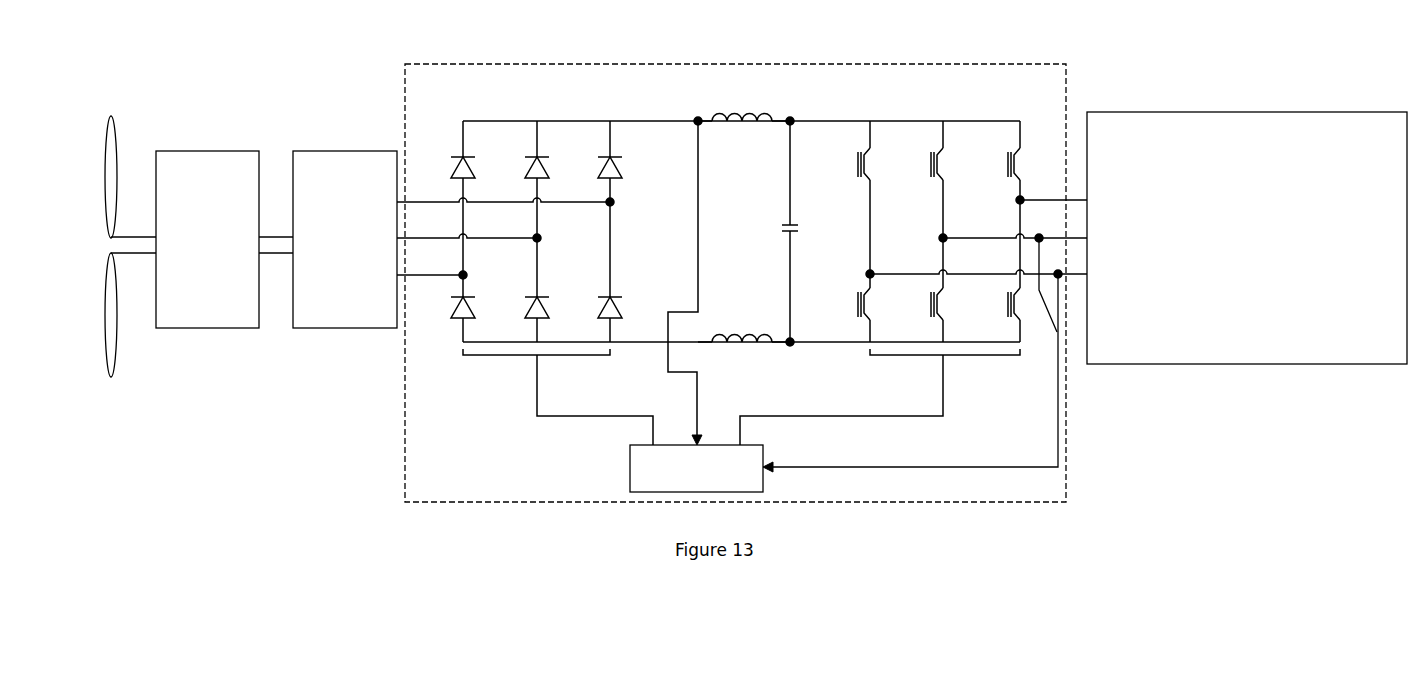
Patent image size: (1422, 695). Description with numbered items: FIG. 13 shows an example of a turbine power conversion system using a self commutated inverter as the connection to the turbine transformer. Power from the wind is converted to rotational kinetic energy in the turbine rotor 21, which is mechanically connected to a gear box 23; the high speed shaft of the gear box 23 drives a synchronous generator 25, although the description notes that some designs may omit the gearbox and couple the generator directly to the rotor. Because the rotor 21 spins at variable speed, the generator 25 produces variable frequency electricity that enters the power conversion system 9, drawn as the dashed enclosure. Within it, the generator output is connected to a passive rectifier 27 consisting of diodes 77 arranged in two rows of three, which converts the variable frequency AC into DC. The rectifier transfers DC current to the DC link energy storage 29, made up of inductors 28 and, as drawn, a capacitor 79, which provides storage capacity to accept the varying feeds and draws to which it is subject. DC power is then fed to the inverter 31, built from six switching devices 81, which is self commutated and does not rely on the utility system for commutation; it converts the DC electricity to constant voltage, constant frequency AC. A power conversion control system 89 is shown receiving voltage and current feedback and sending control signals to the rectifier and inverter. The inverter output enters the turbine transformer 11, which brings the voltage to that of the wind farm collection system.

The power conversion system 9 is at (1067, 63).
The turbine transformer 11 is at (1368, 110).
The rotor 21 is at (110, 246).
The gear box 23 is at (224, 239).
The synchronous generator 25 is at (345, 239).
The rectifier 27 is at (482, 120).
The inductor 28 is at (743, 112).
The DC link storage 29 is at (743, 127).
The inverter 31 is at (975, 118).
The diode 77 is at (473, 157).
The capacitor 79 is at (799, 231).
The switching device (IGBT) 81 is at (924, 228).
The power conversion control system 89 is at (696, 468).